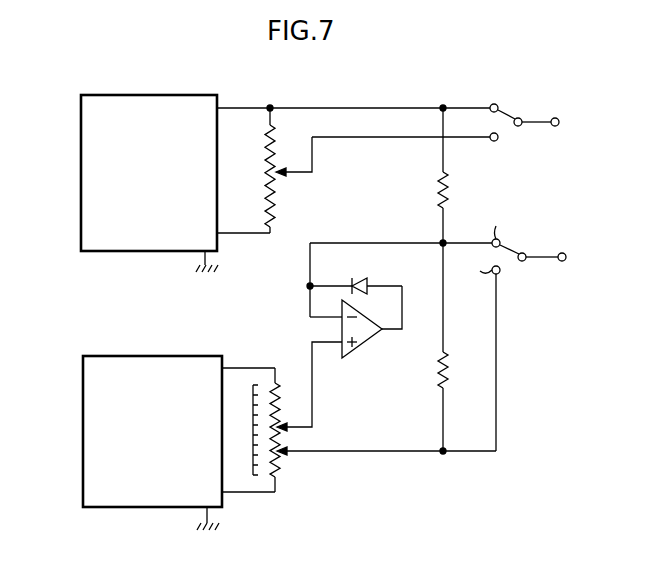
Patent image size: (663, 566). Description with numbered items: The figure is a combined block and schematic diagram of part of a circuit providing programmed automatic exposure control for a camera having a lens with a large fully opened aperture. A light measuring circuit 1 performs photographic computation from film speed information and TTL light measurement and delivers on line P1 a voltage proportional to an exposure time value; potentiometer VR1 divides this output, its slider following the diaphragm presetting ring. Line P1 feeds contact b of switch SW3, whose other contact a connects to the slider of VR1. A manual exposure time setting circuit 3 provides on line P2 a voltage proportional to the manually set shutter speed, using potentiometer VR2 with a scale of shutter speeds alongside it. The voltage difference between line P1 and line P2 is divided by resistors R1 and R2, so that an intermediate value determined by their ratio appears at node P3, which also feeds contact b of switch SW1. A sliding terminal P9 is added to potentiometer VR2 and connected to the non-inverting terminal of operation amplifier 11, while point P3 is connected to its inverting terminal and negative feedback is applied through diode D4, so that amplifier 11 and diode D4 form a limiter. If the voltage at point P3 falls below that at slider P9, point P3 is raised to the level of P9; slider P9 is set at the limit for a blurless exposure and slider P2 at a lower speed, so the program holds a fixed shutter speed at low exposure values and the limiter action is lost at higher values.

The light measuring circuit 1 is at (80, 213).
The manual exposure time setting circuit 3 is at (83, 450).
The operation amplifier 11 is at (366, 341).
The line P1 is at (346, 108).
The line P2 is at (304, 453).
The point P3 is at (441, 243).
The sliding terminal P9 is at (290, 430).
The potentiometer VR1 is at (279, 195).
The potentiometer VR2 is at (276, 480).
The resistor R1 is at (449, 193).
The resistor R2 is at (447, 374).
The diode D4 is at (362, 281).
The switch SW1 is at (517, 262).
The switch SW3 is at (513, 127).